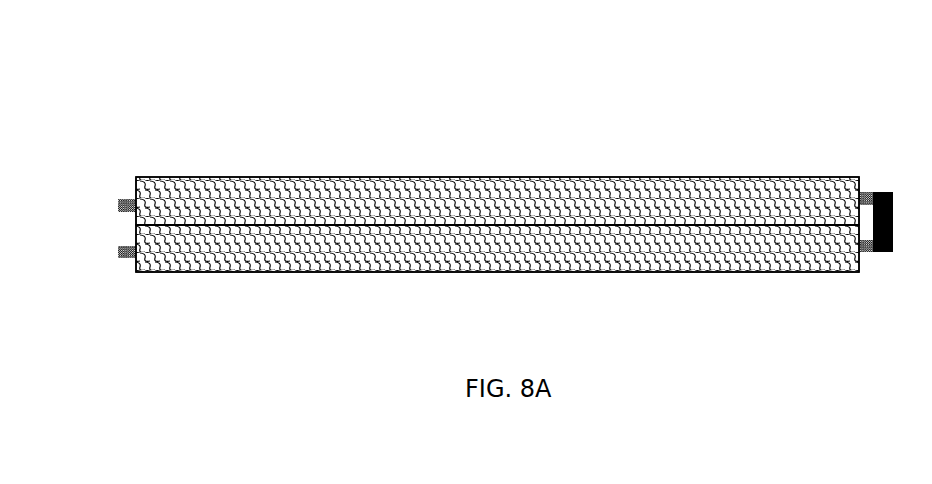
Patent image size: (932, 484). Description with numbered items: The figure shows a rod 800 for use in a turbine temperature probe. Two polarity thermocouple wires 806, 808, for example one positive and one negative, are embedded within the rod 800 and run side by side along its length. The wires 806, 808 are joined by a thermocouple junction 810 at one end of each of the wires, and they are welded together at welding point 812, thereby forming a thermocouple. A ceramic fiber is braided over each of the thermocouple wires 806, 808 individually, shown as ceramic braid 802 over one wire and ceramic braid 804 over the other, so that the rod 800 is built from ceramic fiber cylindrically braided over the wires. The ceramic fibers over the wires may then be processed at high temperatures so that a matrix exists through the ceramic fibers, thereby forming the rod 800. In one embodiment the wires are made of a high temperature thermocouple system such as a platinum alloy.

The rod 800 is at (276, 110).
The ceramic braid 802 is at (202, 188).
The ceramic braid 804 is at (232, 247).
The thermocouple wire 806 is at (108, 196).
The thermocouple wire 808 is at (108, 252).
The thermocouple junction 810 is at (883, 180).
The welding point 812 is at (123, 227).